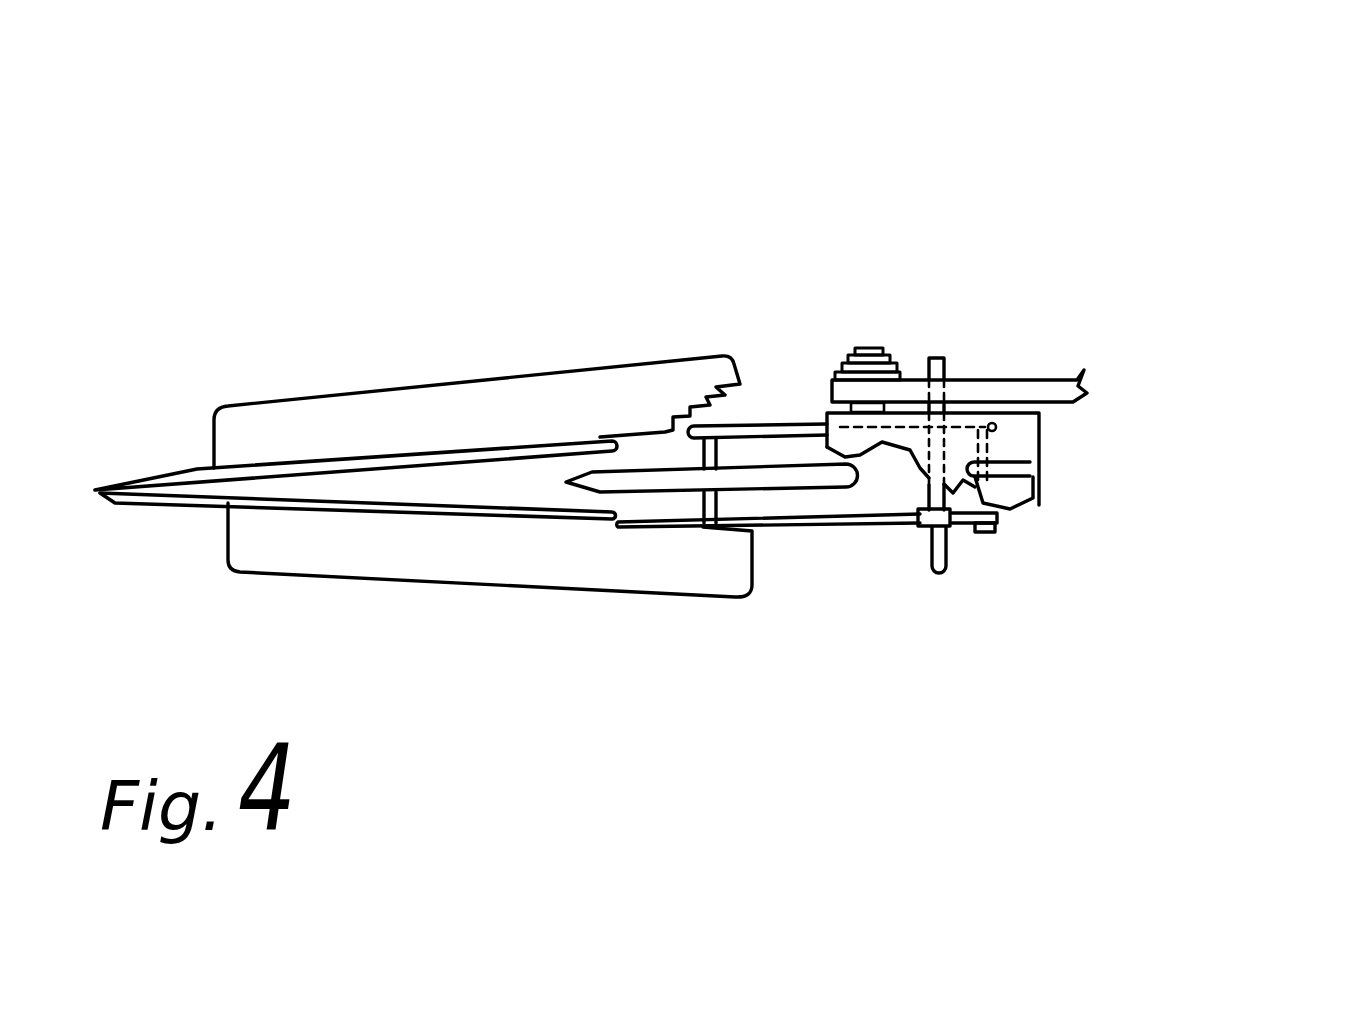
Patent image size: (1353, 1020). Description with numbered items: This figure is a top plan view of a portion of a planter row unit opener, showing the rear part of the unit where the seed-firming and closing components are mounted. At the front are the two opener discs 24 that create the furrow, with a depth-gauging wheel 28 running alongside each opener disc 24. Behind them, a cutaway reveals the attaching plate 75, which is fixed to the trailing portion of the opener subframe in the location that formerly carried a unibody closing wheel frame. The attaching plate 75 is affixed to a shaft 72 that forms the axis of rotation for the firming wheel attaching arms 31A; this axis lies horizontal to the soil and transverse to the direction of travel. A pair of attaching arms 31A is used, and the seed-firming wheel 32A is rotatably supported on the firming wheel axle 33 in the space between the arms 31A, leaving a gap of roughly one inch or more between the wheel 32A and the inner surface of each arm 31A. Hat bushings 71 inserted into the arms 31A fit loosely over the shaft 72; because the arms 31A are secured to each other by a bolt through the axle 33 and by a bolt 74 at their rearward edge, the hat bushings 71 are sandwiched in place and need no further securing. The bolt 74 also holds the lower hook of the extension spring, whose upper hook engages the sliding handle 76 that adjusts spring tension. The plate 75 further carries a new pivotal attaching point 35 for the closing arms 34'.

The opener disc 24 is at (170, 492).
The depth-gauging wheel 28 is at (307, 447).
The firming wheel attaching arm 31A is at (808, 423).
The seed-firming wheel 32A is at (643, 500).
The firming wheel axle 33 is at (736, 507).
The closing arm 34' is at (967, 276).
The pivotal attaching point 35 is at (880, 343).
The hat bushing 71 is at (919, 532).
The shaft 72 is at (945, 580).
The bolt 74 is at (990, 549).
The attaching plate 75 is at (1048, 431).
The sliding handle 76 is at (1040, 479).